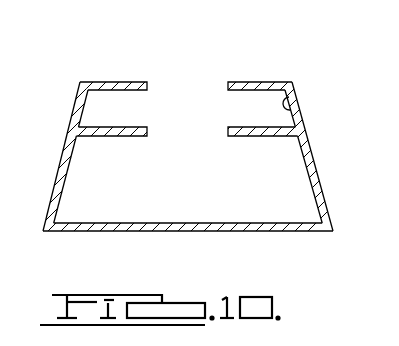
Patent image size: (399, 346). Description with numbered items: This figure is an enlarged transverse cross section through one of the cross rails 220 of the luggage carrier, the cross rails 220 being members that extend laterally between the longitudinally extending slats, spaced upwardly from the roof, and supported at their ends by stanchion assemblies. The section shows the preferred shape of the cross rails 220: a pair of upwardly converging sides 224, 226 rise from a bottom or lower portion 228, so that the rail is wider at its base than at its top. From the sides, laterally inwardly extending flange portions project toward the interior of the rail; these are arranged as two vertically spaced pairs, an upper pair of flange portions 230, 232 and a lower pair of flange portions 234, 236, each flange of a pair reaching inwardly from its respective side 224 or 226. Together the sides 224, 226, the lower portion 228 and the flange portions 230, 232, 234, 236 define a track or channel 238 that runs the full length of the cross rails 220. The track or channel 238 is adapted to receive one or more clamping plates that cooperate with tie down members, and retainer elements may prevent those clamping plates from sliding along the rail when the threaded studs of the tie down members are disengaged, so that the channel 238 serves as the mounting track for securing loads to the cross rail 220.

The cross rail 220 is at (199, 151).
The upwardly converging side 224 is at (358, 176).
The upwardly converging side 226 is at (64, 160).
The bottom or lower portion 228 is at (200, 233).
The flange portion 230 is at (133, 81).
The flange portion 232 is at (232, 82).
The flange portion 234 is at (118, 137).
The flange portion 236 is at (258, 130).
The track or channel 238 is at (290, 102).